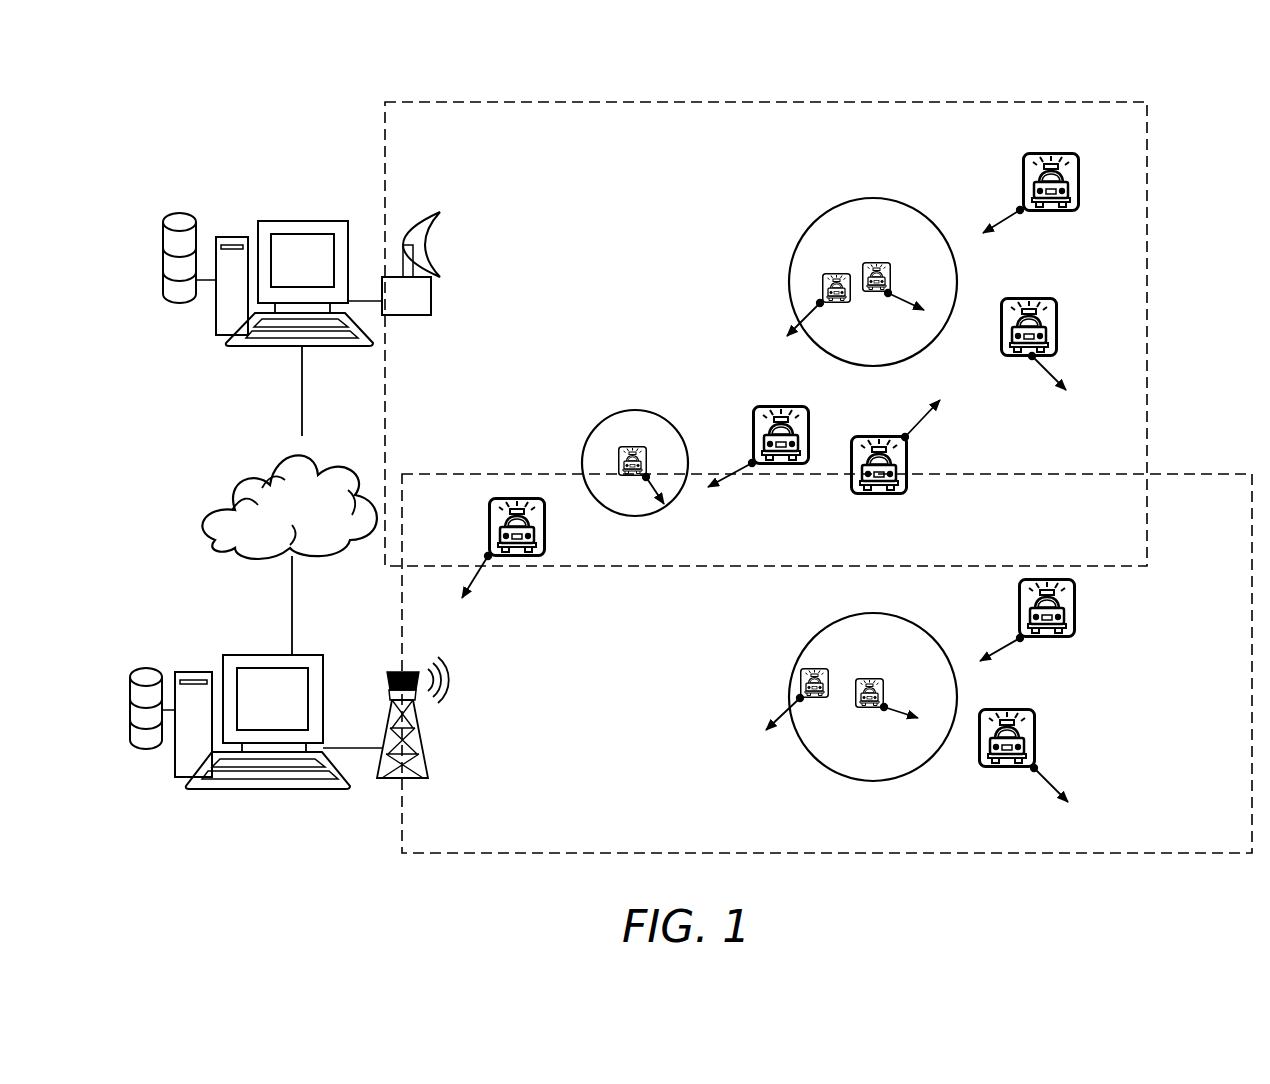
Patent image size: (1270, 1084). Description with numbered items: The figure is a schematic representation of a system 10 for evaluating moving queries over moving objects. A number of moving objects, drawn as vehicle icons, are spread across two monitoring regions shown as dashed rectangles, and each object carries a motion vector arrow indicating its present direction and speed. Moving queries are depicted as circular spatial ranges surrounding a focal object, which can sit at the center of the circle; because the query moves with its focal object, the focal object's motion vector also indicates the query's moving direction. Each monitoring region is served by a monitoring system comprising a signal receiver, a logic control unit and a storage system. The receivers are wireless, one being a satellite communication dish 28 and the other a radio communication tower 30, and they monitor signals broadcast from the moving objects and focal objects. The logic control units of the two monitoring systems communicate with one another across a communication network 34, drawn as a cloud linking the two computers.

The system 10 is at (328, 128).
The satellite communication dish 28 is at (431, 297).
The radio communication tower 30 is at (432, 728).
The communication network 34 is at (236, 490).